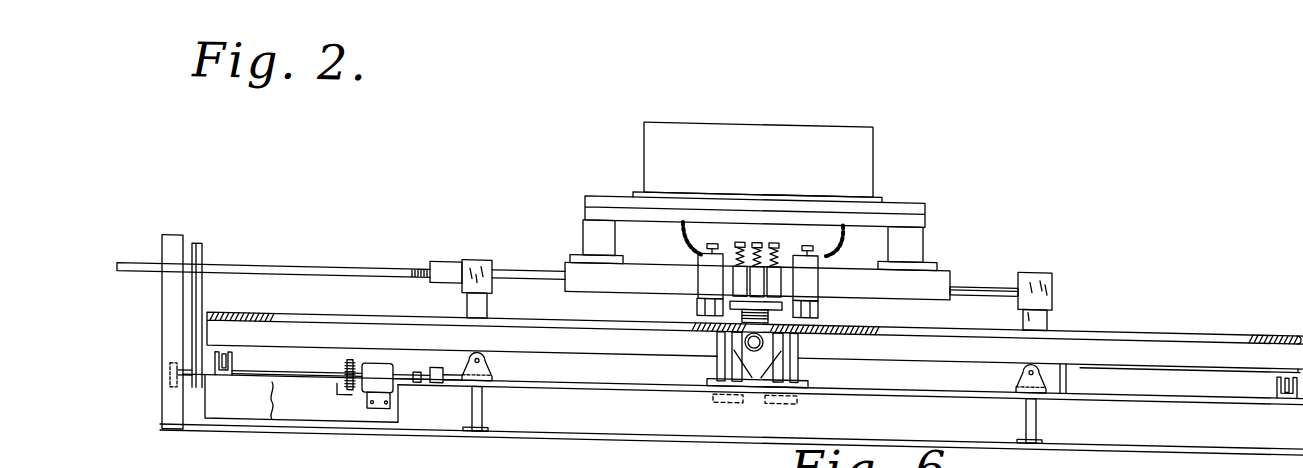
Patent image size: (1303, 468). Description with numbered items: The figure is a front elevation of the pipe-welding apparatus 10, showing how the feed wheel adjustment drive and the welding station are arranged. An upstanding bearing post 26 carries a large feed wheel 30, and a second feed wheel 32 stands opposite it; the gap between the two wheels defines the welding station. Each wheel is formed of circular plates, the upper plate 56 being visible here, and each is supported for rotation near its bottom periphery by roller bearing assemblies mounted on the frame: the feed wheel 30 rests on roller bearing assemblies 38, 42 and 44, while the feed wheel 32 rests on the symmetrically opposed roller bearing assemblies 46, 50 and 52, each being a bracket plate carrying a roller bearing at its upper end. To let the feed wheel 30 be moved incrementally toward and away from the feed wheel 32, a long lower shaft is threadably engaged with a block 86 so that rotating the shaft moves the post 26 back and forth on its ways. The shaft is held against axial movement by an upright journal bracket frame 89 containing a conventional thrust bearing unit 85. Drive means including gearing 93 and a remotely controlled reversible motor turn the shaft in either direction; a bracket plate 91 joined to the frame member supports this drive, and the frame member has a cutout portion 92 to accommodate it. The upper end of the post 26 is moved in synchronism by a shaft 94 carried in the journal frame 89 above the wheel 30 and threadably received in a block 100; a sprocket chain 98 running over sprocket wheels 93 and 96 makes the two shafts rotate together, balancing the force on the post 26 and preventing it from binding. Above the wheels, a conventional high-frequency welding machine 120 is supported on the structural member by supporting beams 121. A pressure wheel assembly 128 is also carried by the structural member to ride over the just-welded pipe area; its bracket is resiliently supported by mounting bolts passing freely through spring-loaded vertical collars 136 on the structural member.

The apparatus 10 is at (1063, 262).
The bearing post 26 is at (487, 294).
The feed wheel 30 is at (394, 303).
The feed wheel 32 is at (1183, 304).
The roller bearing assembly 38 is at (235, 357).
The roller bearing assembly 42 is at (670, 408).
The roller bearing assembly 44 is at (500, 357).
The roller bearing assembly 46 is at (797, 380).
The roller bearing assembly 50 is at (1277, 362).
The roller bearing assembly 52 is at (1012, 356).
The upper plate 56 is at (267, 461).
The thrust bearing unit 85 is at (163, 388).
The block 86 is at (447, 362).
The journal bracket frame 89 is at (166, 336).
The bracket plate 91 is at (380, 400).
The cutout portion 92 is at (325, 408).
The gearing / sprocket wheel 93 is at (348, 354).
The shaft 94 is at (383, 258).
The sprocket wheel 96 is at (203, 258).
The sprocket chain 98 is at (202, 304).
The block 100 is at (457, 252).
The welding machine 120 is at (865, 157).
The supporting beams 121 is at (912, 197).
The pressure wheel assembly 128 is at (793, 223).
The vertical collars 136 is at (940, 256).